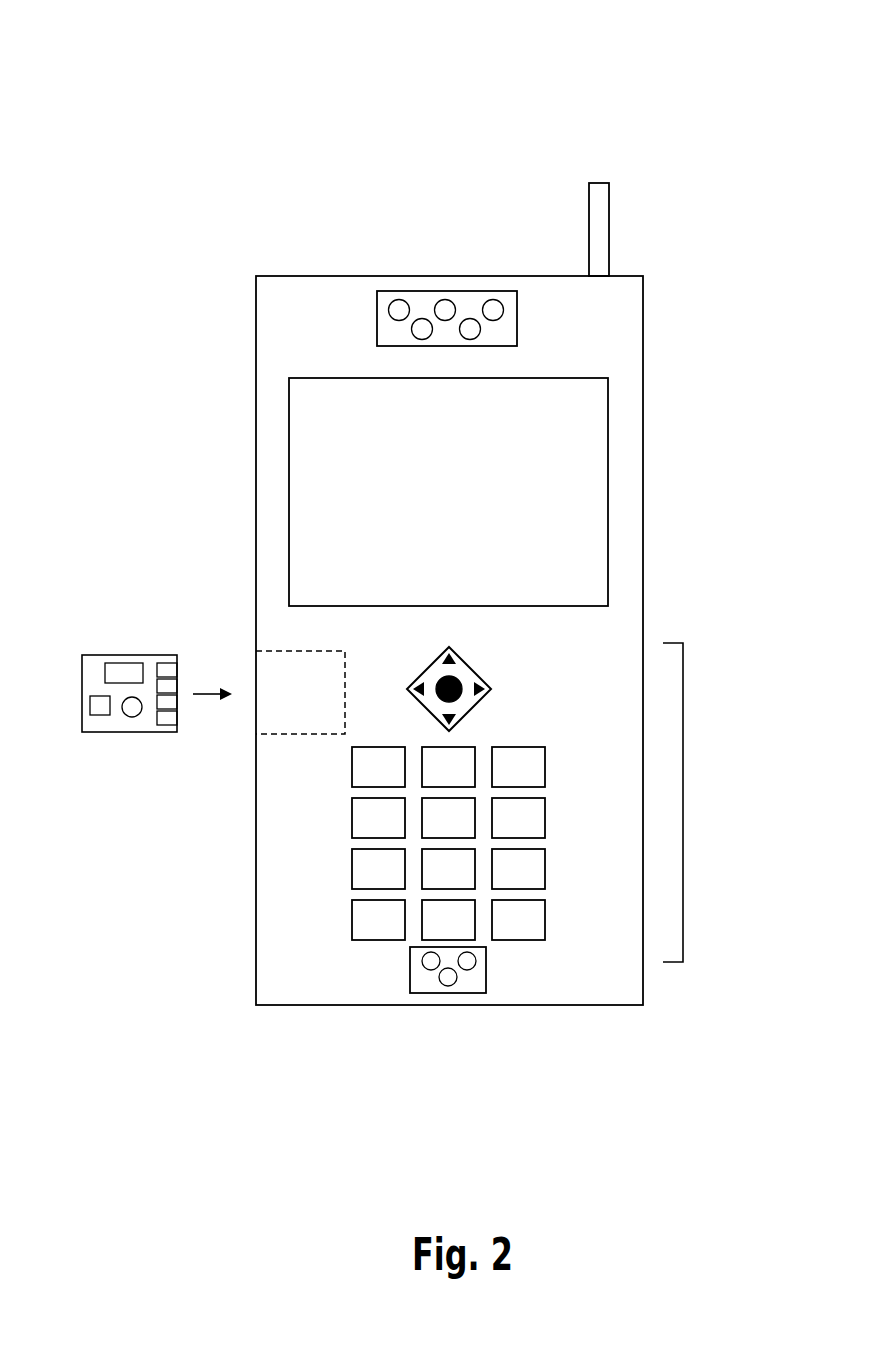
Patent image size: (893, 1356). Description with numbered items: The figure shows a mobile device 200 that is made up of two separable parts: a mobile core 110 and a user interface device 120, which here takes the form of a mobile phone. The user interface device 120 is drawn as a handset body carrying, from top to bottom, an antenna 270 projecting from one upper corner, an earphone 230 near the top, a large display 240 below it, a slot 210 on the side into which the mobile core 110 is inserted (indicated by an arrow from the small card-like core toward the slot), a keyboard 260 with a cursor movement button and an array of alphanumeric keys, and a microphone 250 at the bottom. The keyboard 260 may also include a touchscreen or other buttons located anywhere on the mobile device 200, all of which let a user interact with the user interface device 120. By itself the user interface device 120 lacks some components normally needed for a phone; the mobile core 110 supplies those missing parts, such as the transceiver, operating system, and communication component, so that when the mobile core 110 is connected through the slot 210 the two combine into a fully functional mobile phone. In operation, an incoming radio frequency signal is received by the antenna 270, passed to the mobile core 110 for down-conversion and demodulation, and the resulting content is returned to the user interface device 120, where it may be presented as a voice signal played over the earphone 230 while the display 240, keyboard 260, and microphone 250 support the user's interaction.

The mobile device 200 is at (111, 77).
The mobile core 110 is at (135, 655).
The user interface device 120 is at (303, 276).
The slot 210 is at (300, 648).
The earphone 230 is at (445, 291).
The display 240 is at (590, 378).
The microphone 250 is at (448, 993).
The keyboard 260 is at (683, 793).
The antenna 270 is at (607, 212).